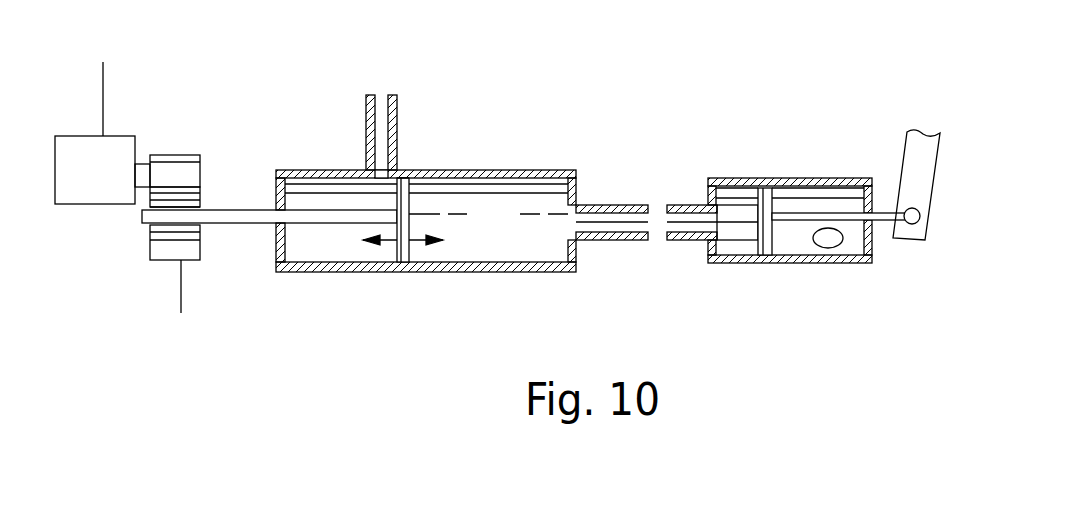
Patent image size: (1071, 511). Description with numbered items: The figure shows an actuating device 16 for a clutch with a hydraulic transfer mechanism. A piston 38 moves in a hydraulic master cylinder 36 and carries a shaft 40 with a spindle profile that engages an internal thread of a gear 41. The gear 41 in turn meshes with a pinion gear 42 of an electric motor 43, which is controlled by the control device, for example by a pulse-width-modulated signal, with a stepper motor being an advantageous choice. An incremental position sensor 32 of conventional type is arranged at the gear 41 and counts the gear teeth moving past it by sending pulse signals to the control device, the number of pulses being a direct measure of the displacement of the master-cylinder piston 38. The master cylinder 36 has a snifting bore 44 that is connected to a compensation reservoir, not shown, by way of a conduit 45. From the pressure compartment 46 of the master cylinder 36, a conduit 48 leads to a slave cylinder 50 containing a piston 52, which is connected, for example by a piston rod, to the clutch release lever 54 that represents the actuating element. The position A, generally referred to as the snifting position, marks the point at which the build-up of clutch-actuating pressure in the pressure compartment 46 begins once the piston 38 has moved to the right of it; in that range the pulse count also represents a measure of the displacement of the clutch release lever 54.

The actuating device 16 is at (503, 153).
The incremental position sensor 32 is at (163, 250).
The hydraulic master cylinder 36 is at (473, 263).
The piston 38 is at (403, 253).
The shaft 40 is at (247, 217).
The gear 41 is at (199, 207).
The pinion gear 42 is at (172, 175).
The electric motor 43 is at (120, 150).
The snifting bore 44 is at (380, 172).
The conduit 45 is at (380, 112).
The pressure compartment 46 is at (513, 233).
The conduit 48 is at (625, 205).
The slave cylinder 50 is at (798, 178).
The piston 52 is at (767, 255).
The clutch release lever 54 is at (912, 172).
The snifting position A is at (400, 173).